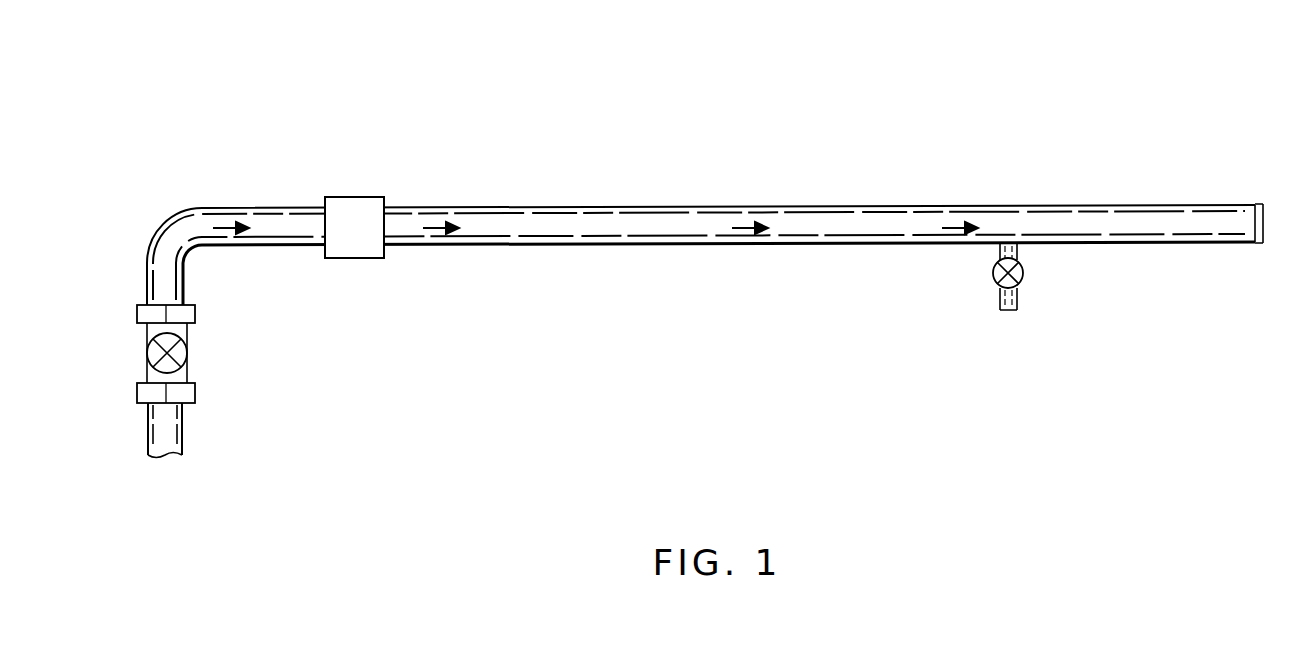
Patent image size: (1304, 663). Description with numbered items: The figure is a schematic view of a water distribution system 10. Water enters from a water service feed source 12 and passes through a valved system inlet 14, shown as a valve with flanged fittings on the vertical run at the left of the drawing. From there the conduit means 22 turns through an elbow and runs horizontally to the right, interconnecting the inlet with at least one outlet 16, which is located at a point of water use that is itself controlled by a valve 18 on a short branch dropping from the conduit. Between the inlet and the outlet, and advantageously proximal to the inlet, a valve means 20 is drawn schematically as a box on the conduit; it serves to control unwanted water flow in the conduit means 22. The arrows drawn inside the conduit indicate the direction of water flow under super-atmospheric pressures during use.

The water distribution system 10 is at (357, 90).
The water service feed source 12 is at (183, 430).
The valved system inlet 14 is at (175, 328).
The outlet 16 is at (1003, 312).
The valve 18 is at (1023, 277).
The valve means 20 is at (368, 210).
The conduit means 22 is at (262, 208).